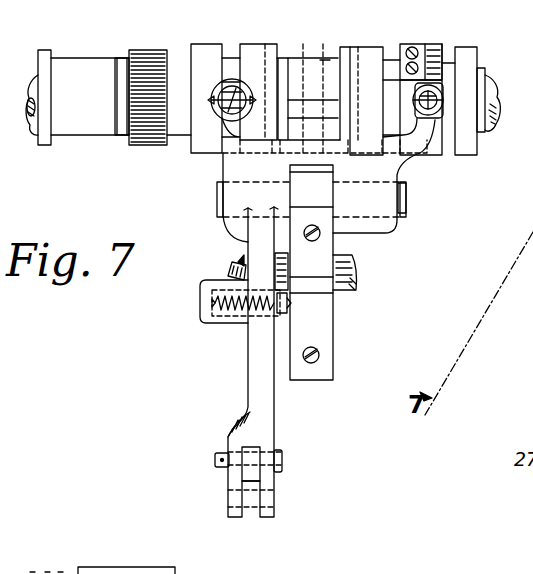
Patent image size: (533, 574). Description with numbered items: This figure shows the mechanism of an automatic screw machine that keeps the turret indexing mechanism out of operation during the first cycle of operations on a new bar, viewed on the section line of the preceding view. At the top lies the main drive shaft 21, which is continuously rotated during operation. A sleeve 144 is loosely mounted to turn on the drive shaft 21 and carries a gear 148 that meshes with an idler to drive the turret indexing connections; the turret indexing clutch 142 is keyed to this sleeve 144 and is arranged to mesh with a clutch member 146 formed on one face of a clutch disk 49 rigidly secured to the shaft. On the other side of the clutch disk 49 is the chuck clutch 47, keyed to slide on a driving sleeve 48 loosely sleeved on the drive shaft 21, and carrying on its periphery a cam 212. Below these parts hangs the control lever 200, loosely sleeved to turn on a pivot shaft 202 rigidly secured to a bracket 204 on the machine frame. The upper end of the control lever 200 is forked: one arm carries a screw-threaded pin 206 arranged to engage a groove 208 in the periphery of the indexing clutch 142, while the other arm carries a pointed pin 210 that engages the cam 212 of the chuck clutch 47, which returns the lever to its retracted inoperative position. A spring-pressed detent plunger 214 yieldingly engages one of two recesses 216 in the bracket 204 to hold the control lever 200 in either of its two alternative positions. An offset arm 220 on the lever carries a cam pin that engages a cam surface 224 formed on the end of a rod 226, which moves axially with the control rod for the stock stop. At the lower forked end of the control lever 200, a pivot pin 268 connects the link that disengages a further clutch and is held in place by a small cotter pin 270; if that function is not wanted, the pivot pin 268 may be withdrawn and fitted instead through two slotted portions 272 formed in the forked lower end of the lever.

The sleeve 144 is at (172, 62).
The gear 148 is at (147, 140).
The turret indexing clutch 142 is at (203, 53).
The groove 208 is at (224, 52).
The pin 206 is at (223, 115).
The clutch member 146 is at (265, 52).
The clutch disk 49 is at (368, 53).
The chuck clutch 47 is at (386, 52).
The cam 212 is at (428, 47).
The pointed pin 210 is at (430, 118).
The driving sleeve 48 is at (478, 77).
The main drive shaft 21 is at (493, 112).
The pivot shaft 202 is at (406, 213).
The bracket 204 is at (311, 373).
The rod 226 is at (353, 268).
The recesses 216 is at (283, 300).
The cam surface 224 is at (238, 260).
The offset arm 220 is at (230, 266).
The spring-pressed detent plunger 214 is at (237, 320).
The control lever 200 is at (260, 382).
The cotter pin 270 is at (222, 458).
The pivot pin 268 is at (282, 457).
The slotted portions 272 is at (234, 498).